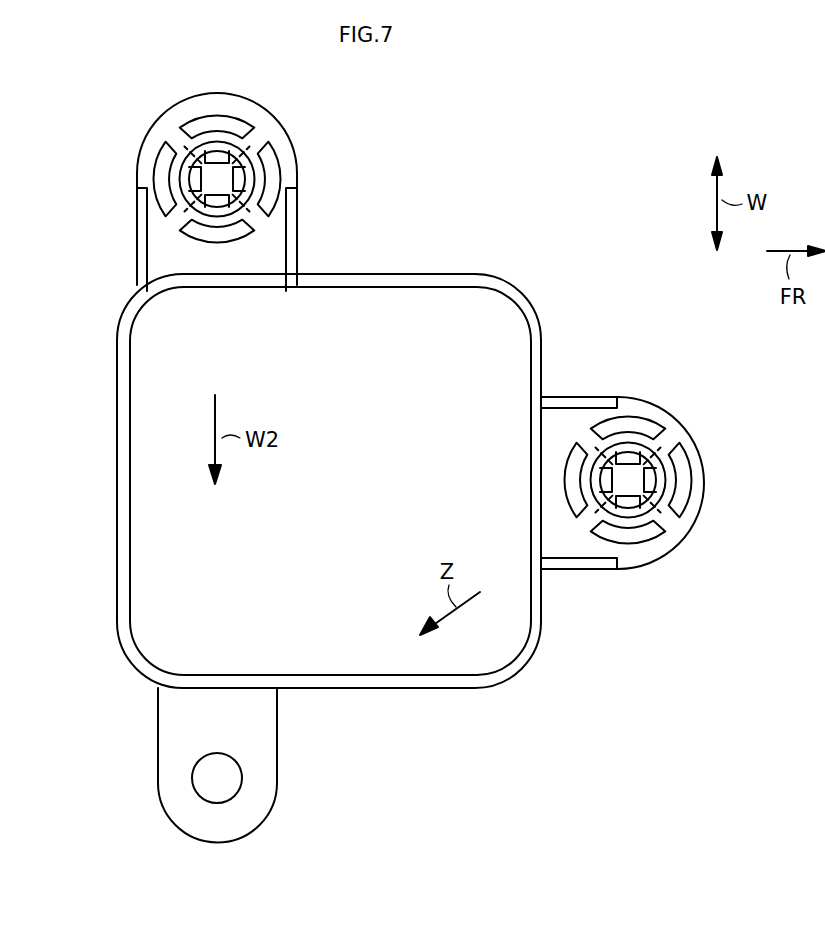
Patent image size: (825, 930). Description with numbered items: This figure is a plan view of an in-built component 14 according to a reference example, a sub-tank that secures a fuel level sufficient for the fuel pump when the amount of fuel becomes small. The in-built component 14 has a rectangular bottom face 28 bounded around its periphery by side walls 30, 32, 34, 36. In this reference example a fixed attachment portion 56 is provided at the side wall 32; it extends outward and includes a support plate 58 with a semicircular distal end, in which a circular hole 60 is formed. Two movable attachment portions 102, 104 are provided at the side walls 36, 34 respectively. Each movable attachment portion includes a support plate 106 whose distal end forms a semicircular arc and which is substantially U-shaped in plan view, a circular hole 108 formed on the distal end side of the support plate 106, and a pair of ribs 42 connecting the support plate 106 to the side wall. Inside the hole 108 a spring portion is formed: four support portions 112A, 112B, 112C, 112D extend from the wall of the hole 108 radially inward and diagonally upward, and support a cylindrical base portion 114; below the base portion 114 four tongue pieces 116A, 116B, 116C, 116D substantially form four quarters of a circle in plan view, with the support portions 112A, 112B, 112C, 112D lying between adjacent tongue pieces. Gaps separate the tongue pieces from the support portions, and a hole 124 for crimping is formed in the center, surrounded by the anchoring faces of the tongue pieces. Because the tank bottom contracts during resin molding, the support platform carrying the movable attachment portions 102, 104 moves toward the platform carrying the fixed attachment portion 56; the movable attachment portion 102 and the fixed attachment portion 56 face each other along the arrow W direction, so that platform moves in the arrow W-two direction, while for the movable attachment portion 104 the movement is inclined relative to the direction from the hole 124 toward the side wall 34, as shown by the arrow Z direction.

The in-built component 14 is at (112, 579).
The bottom face 28 is at (358, 447).
The side wall 30 is at (116, 450).
The side wall 32 is at (400, 689).
The side wall 34 is at (541, 318).
The side wall 36 is at (427, 274).
The ribs 42 is at (137, 272).
The fixed attachment portion 56 is at (148, 754).
The support plate 58 is at (270, 720).
The hole 60 is at (235, 786).
The movable attachment portion 102 is at (118, 105).
The movable attachment portion 104 is at (745, 412).
The support plate 106 is at (139, 150).
The hole 108 is at (272, 162).
The support portion 112A is at (258, 142).
The support portion 112B is at (178, 138).
The support portion 112C is at (180, 223).
The support portion 112D is at (254, 224).
The base portion 114 is at (204, 208).
The tongue piece 116A is at (222, 127).
The tongue piece 116B is at (168, 180).
The tongue piece 116C is at (208, 228).
The tongue piece 116D is at (269, 183).
The hole for crimping 124 is at (222, 185).